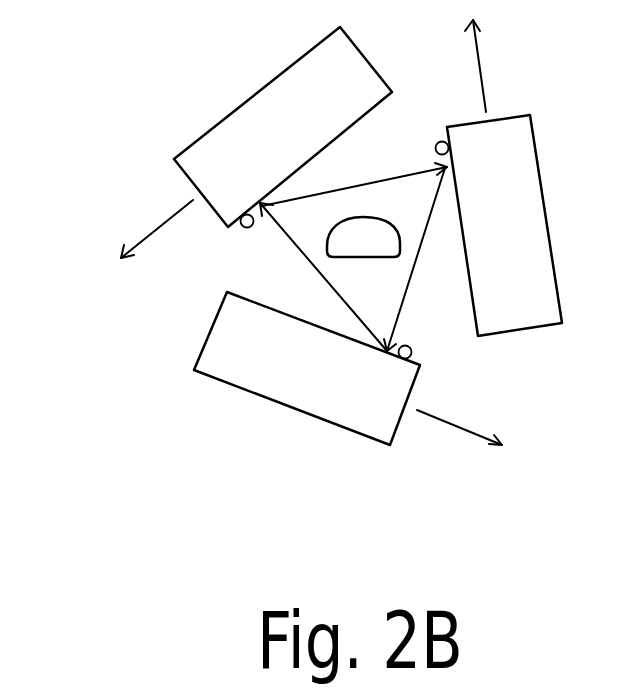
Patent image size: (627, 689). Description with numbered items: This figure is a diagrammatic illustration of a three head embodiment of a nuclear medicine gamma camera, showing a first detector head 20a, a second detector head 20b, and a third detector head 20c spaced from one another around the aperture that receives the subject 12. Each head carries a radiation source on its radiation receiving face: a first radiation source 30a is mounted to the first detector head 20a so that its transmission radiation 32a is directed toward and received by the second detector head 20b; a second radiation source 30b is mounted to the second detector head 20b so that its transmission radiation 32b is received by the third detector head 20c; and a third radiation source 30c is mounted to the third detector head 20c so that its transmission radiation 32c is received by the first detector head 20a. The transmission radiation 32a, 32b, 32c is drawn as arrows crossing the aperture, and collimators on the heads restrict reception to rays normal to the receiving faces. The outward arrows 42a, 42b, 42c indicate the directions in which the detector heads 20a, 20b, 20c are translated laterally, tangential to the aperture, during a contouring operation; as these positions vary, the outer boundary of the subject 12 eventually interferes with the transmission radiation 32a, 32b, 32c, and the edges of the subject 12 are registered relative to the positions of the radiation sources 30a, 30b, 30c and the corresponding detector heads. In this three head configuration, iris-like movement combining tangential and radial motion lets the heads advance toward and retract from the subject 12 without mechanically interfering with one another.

The subject 12 is at (350, 248).
The first detector head 20a is at (262, 138).
The second detector head 20b is at (482, 238).
The third detector head 20c is at (291, 382).
The first radiation source 30a is at (248, 228).
The second radiation source 30b is at (441, 141).
The third radiation source 30c is at (412, 353).
The transmission radiation 32a is at (345, 189).
The transmission radiation 32b is at (421, 237).
The transmission radiation 32c is at (292, 240).
The direction of lateral translation 42a is at (168, 222).
The direction of lateral translation 42b is at (480, 70).
The direction of lateral translation 42c is at (447, 427).